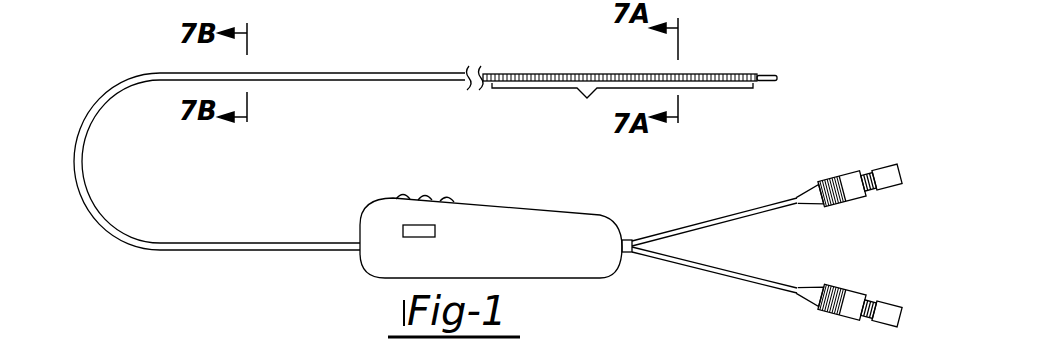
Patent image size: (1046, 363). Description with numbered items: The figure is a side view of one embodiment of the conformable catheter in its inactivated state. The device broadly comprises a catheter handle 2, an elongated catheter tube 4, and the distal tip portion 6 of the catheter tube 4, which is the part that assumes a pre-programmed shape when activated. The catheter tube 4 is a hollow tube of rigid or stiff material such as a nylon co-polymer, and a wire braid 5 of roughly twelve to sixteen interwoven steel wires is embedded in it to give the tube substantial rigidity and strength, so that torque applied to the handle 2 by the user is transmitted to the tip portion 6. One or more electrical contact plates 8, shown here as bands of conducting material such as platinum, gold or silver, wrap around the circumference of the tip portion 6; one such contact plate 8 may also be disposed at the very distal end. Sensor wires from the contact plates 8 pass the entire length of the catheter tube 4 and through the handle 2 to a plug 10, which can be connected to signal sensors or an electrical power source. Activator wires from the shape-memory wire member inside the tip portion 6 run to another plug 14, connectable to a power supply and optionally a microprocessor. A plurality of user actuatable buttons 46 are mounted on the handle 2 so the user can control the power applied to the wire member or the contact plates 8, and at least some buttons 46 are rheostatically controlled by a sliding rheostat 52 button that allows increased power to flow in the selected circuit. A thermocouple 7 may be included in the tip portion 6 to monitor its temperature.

The catheter handle 2 is at (551, 225).
The catheter tube 4 is at (87, 134).
The wire braid 5 is at (466, 73).
The distal tip portion 6 is at (620, 100).
The thermocouple 7 is at (766, 73).
The electrical contact plates 8 is at (507, 74).
The plug 10 is at (836, 180).
The plug 14 is at (846, 290).
The user actuatable buttons 46 is at (448, 198).
The sliding rheostat button 52 is at (433, 237).